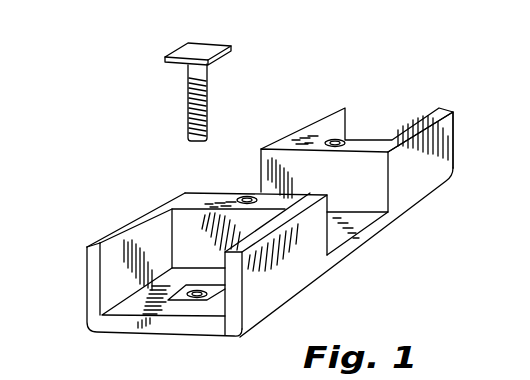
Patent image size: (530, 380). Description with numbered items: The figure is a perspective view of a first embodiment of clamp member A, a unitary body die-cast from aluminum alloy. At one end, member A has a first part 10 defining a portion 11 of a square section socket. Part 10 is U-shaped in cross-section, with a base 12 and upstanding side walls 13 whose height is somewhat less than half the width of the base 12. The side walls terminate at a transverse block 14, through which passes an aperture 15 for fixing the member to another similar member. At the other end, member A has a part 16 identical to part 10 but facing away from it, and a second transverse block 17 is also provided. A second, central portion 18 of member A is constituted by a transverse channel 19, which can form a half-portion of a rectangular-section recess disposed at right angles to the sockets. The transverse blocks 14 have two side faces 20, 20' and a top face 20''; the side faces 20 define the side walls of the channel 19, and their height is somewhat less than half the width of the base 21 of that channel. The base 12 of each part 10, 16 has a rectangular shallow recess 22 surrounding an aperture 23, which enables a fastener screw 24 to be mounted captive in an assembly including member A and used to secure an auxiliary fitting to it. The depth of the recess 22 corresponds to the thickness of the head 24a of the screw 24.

The clamp member A is at (365, 290).
The first part 10 is at (131, 213).
The portion of a square section socket 11 is at (73, 315).
The base 12 is at (135, 309).
The side walls 13 is at (113, 268).
The transverse block 14 is at (200, 195).
The aperture 15 is at (244, 196).
The part 16 is at (318, 110).
The second clamping block 17 is at (410, 107).
The central portion 18 is at (366, 192).
The transverse channel 19 is at (366, 192).
The side face 20 is at (329, 155).
The side face 20' is at (295, 263).
The top face 20'' is at (198, 189).
The base 21 is at (378, 228).
The rectangular shallow recess 22 is at (180, 302).
The aperture 23 is at (198, 293).
The fastener screw 24 is at (177, 80).
The head 24a is at (187, 48).